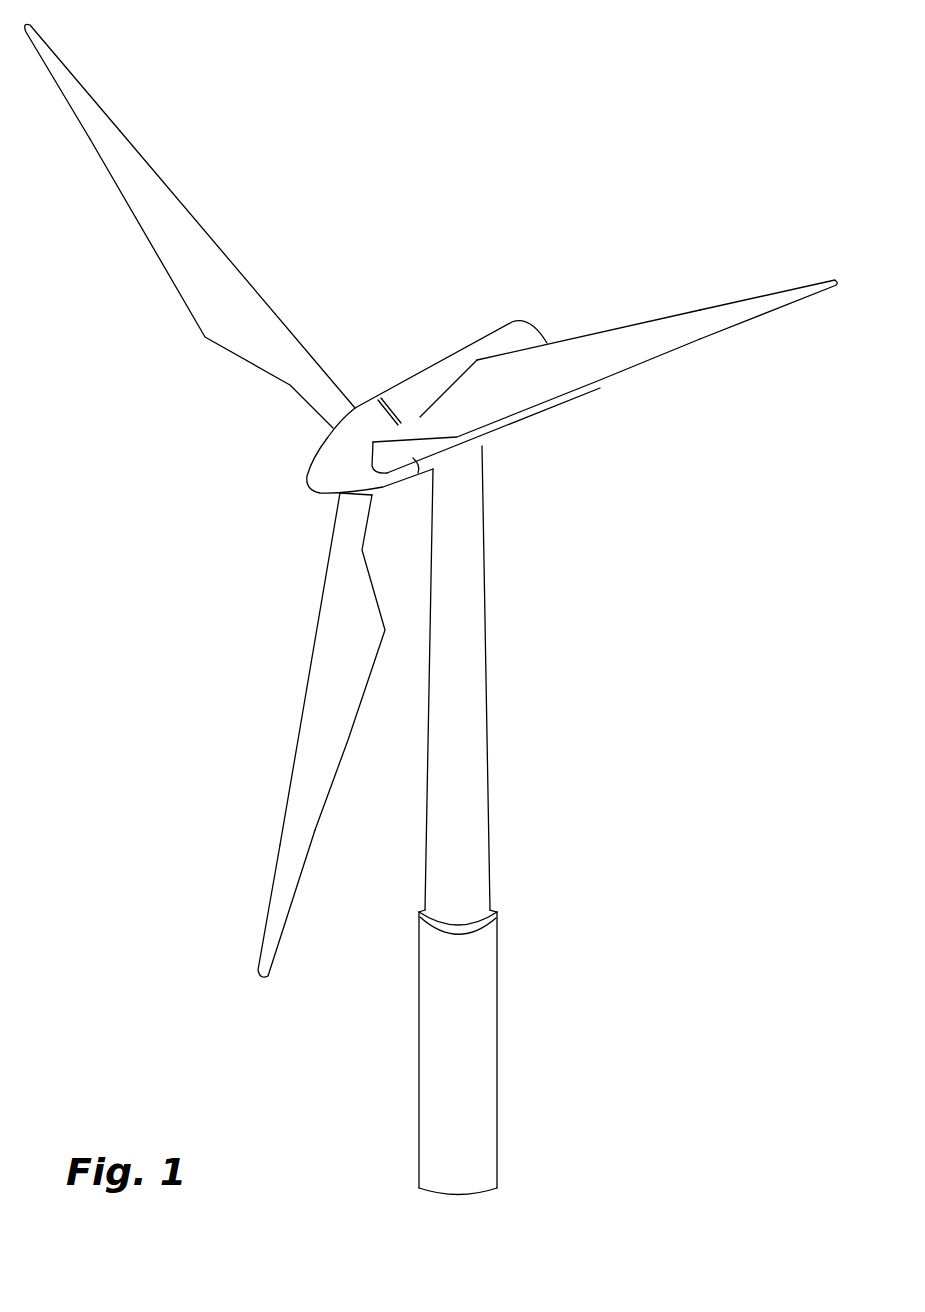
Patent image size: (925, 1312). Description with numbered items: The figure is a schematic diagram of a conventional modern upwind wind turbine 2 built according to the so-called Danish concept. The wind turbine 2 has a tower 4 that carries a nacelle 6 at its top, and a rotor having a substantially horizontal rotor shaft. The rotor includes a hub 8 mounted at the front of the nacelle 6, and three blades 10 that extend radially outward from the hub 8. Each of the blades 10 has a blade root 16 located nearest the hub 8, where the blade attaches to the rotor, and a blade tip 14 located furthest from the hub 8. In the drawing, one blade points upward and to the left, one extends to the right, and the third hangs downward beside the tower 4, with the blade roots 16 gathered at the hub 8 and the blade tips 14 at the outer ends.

The wind turbine 2 is at (590, 756).
The tower 4 is at (475, 678).
The nacelle 6 is at (410, 382).
The hub 8 is at (320, 462).
The blades 10 is at (220, 320).
The blade tip 14 is at (68, 80).
The blade root 16 is at (337, 428).